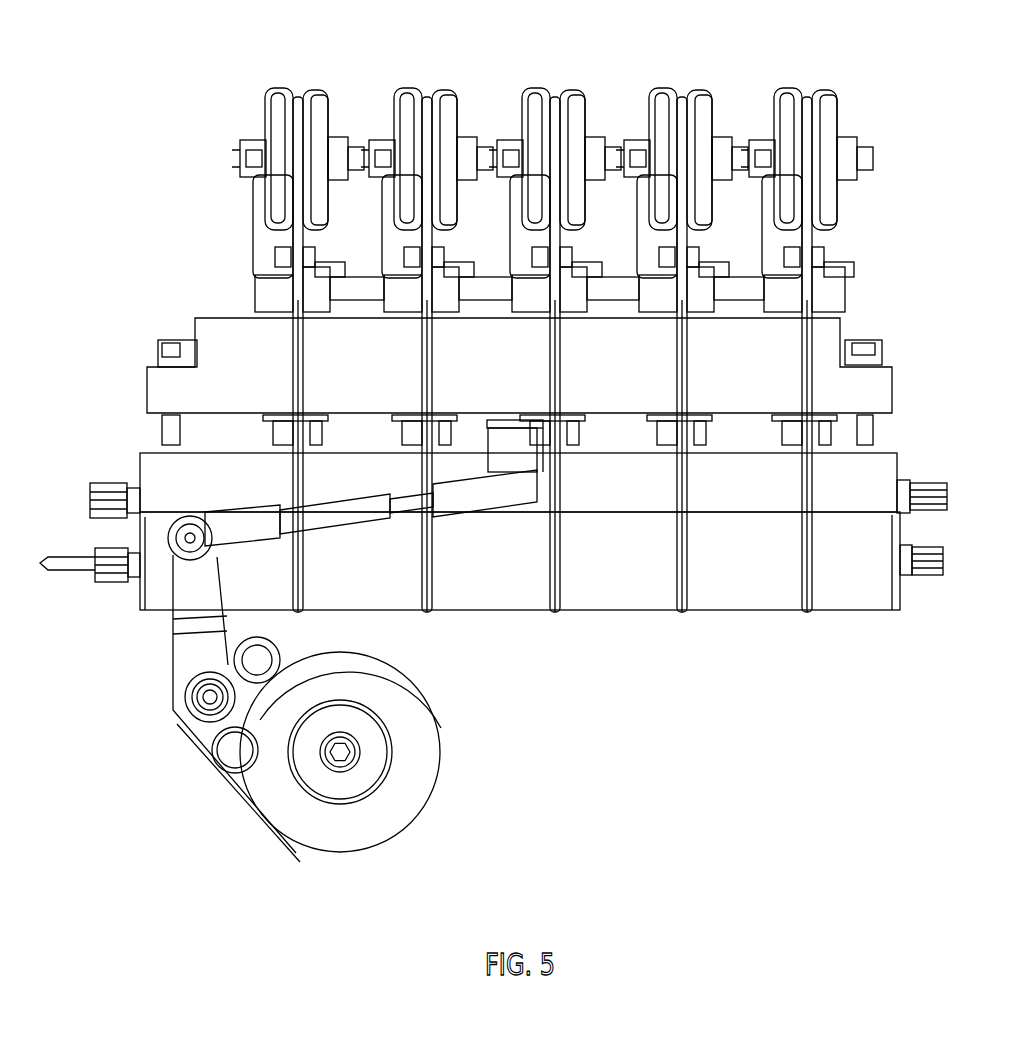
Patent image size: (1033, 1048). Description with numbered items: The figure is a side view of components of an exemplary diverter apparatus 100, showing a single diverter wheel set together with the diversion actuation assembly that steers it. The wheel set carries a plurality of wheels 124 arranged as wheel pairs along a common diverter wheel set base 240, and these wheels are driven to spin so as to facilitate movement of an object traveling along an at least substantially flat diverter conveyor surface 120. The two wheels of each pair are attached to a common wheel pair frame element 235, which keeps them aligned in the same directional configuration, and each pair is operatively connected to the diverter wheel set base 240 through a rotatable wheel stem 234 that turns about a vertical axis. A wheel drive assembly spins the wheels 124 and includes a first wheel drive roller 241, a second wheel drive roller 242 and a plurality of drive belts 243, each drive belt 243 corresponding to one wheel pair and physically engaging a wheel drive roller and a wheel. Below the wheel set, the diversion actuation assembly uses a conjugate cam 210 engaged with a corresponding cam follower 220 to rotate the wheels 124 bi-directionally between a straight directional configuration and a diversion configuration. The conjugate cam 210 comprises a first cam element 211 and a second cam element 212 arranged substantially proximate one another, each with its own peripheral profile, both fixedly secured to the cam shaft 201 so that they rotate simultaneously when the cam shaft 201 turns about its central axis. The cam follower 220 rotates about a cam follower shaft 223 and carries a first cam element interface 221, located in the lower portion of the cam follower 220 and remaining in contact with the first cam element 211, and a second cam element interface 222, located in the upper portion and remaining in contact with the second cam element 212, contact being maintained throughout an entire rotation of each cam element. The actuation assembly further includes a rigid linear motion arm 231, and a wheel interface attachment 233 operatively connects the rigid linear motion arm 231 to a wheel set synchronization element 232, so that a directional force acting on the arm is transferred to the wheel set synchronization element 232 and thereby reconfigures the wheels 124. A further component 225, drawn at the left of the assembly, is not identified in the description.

The diverter apparatus 100 is at (765, 889).
The diverter conveyor surface 120 is at (205, 98).
The wheels 124 is at (825, 97).
The cam shaft 201 is at (333, 783).
The conjugate cam 210 is at (383, 779).
The first cam element 211 is at (427, 767).
The second cam element 212 is at (413, 702).
The cam follower 220 is at (185, 658).
The first cam element interface 221 is at (233, 757).
The second cam element interface 222 is at (262, 653).
The cam follower shaft 223 is at (203, 727).
The connector 225 is at (132, 540).
The rigid linear motion arm 231 is at (237, 517).
The wheel set synchronization element 232 is at (356, 290).
The wheel interface attachment 233 is at (513, 455).
The rotatable wheel stem 234 is at (499, 260).
The wheel pair frame element 235 is at (256, 210).
The diverter wheel set base 240 is at (217, 334).
The first wheel drive roller 241 is at (742, 590).
The second wheel drive roller 242 is at (897, 467).
The drive belt 243 is at (813, 335).